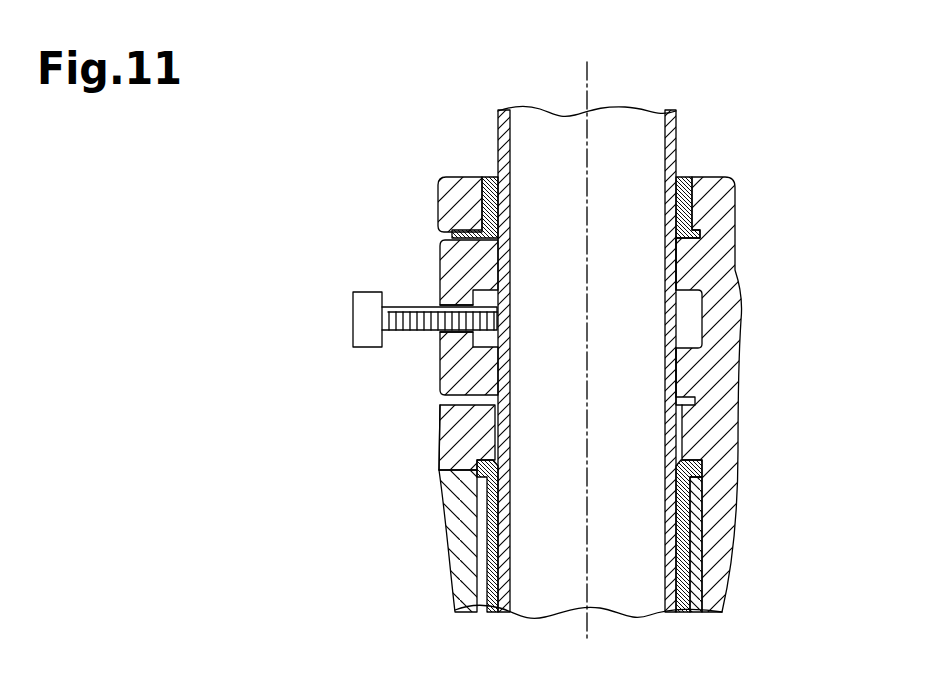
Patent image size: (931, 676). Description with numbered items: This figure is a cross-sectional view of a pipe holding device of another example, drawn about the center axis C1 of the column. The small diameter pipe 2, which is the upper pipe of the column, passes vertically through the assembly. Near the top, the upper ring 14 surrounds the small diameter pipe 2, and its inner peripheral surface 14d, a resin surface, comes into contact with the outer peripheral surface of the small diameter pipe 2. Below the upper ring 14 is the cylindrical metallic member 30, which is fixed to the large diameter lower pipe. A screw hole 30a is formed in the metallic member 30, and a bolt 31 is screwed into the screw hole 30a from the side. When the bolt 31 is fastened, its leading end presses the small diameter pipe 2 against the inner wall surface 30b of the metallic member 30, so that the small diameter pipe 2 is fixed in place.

The small diameter pipe 2 is at (690, 540).
The upper ring 14 is at (694, 202).
The inner peripheral surface 14d is at (510, 208).
The cylindrical metallic member 30 is at (745, 312).
The screw hole 30a is at (456, 306).
The inner wall surface 30b is at (668, 270).
The bolt 31 is at (352, 318).
The center axis C1 is at (590, 80).